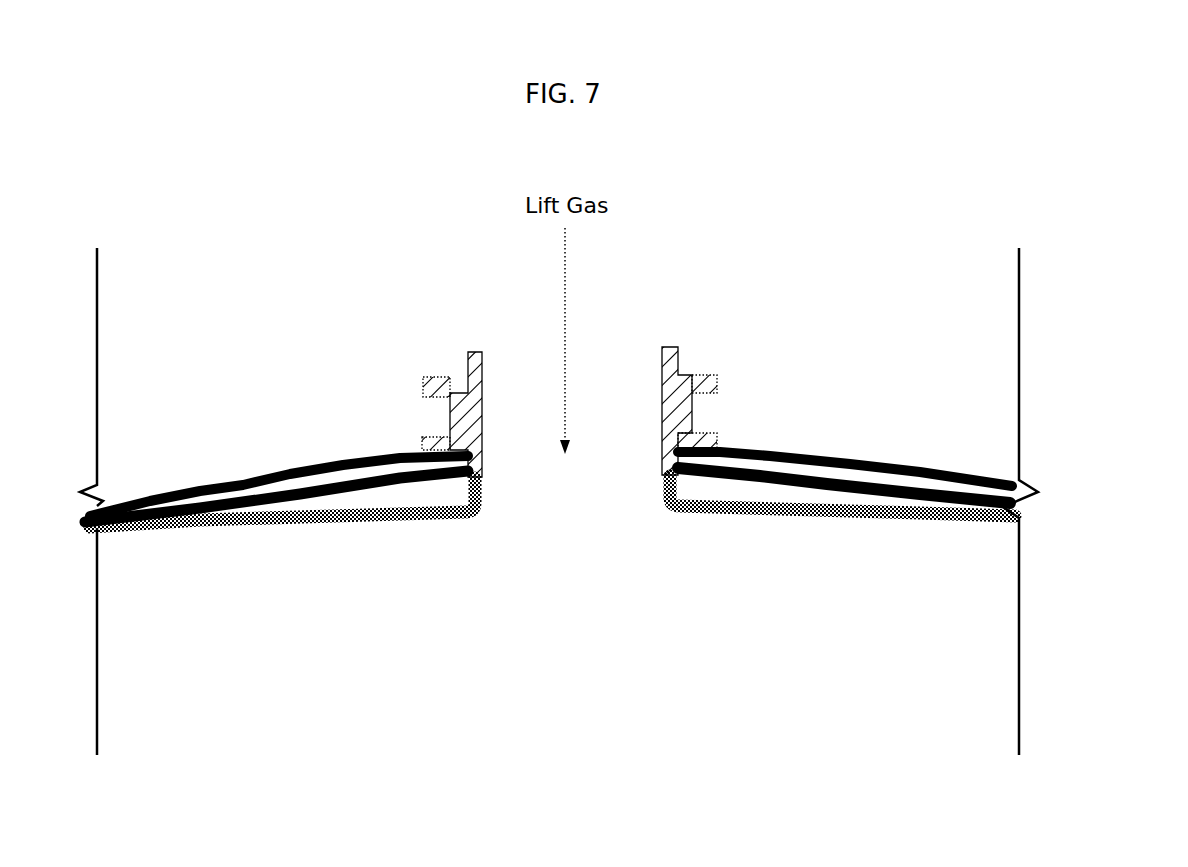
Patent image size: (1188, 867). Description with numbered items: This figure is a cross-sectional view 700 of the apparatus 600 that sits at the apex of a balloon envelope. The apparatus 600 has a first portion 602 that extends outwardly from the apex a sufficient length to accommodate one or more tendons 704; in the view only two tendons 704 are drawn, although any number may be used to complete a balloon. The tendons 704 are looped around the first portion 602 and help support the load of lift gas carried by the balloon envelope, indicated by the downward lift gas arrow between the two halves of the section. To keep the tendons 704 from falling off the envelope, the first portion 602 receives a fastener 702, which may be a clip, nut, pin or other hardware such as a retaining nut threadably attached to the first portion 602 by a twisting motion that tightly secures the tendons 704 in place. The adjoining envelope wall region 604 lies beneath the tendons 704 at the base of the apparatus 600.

The riser / pipe assembly 700 is at (1177, 104).
The apparatus 600 is at (717, 268).
The first portion 602 is at (467, 355).
The fastener 702 is at (425, 385).
The tendons 704 is at (363, 477).
The tube wall / liner 604 is at (698, 508).